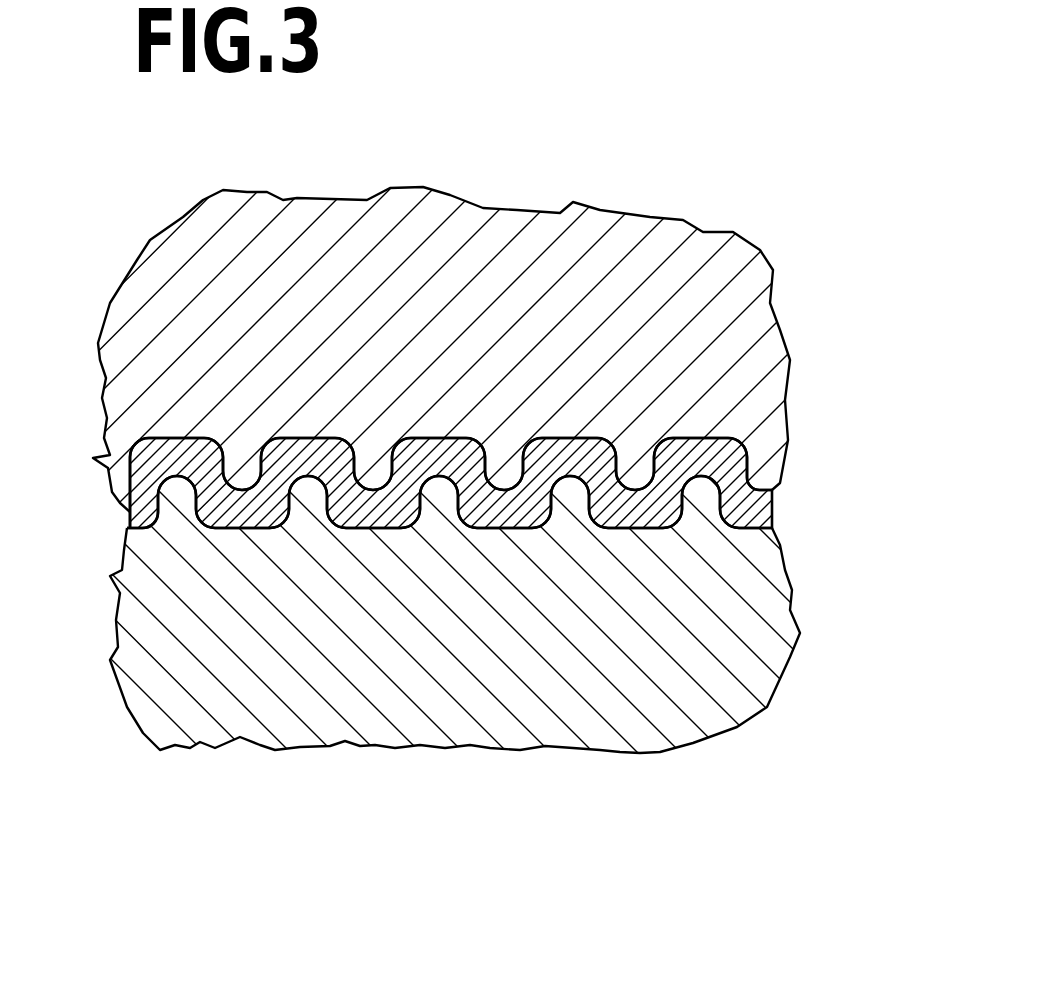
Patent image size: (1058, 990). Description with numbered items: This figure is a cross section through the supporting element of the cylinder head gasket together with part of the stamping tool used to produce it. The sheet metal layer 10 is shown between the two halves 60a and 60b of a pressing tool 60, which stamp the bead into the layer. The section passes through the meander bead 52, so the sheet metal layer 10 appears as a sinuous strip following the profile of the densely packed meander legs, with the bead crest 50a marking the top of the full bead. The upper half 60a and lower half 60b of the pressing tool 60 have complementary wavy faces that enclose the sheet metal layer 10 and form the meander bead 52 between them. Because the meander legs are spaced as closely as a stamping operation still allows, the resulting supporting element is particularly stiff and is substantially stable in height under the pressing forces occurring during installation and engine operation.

The sheet metal layer 10 is at (130, 513).
The bead crest 50a is at (177, 400).
The meander bead 52 is at (231, 560).
The pressing tool 60 is at (529, 492).
The first half of pressing tool 60a is at (673, 237).
The second half of pressing tool 60b is at (643, 737).